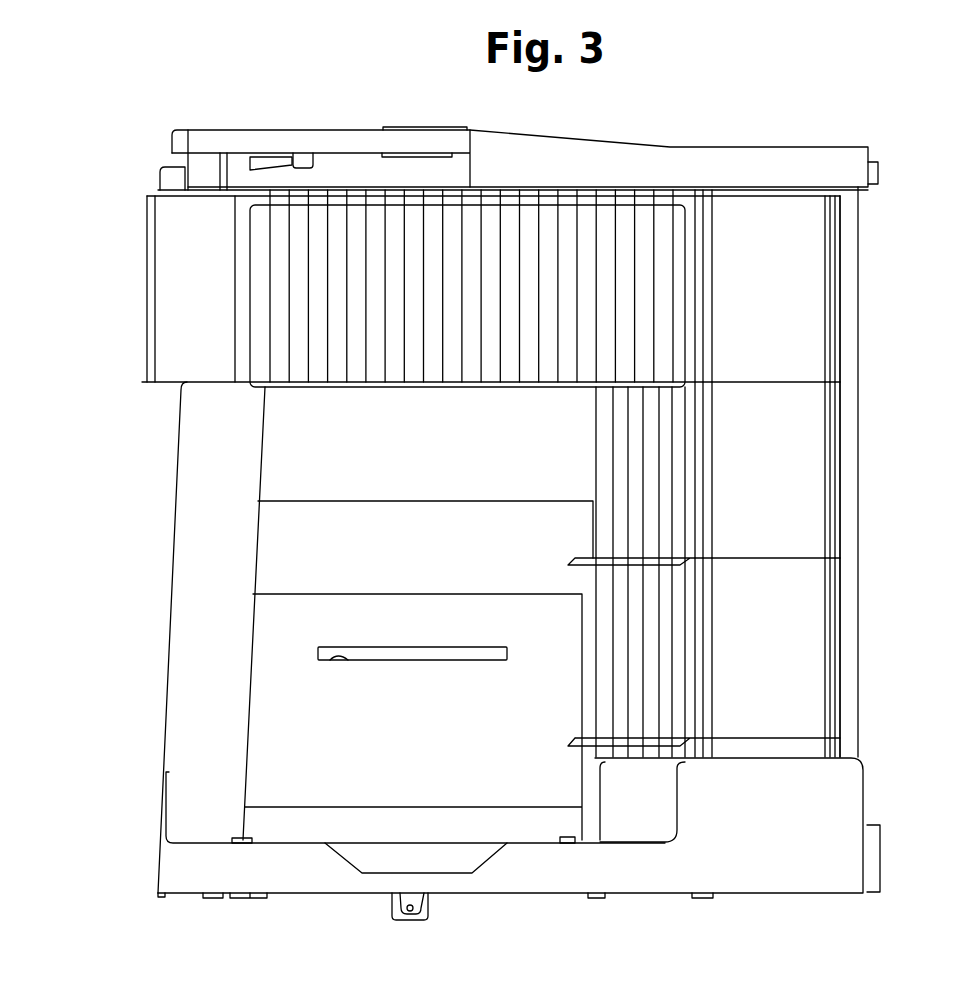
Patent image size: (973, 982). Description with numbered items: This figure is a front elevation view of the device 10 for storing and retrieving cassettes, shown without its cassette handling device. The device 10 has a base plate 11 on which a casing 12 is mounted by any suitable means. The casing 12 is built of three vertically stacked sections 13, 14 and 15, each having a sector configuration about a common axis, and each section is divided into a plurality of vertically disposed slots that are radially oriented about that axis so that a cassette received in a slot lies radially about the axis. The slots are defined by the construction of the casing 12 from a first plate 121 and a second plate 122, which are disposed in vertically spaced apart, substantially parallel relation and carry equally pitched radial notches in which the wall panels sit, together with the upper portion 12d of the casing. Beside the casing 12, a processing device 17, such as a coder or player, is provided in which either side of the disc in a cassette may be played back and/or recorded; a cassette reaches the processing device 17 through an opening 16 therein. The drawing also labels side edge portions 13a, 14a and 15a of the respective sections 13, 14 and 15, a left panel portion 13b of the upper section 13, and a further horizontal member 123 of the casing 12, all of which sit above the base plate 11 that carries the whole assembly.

The device for storing and retrieving cassettes 10 is at (879, 284).
The base plate 11 is at (197, 867).
The casing 12 is at (848, 438).
The upper lid portion of cover 12d is at (727, 190).
The first plate 121 is at (783, 197).
The second plate 122 is at (800, 378).
The lower partition shelf 123 is at (818, 556).
The section 13 is at (807, 278).
The upper unit side edge 13a is at (838, 320).
The upper unit left panel 13b is at (170, 324).
The section 14 is at (797, 502).
The middle unit side edge 14a is at (838, 517).
The section 15 is at (808, 659).
The lower unit side edge 15a is at (838, 688).
The opening 16 is at (327, 660).
The processing device 17 is at (263, 645).